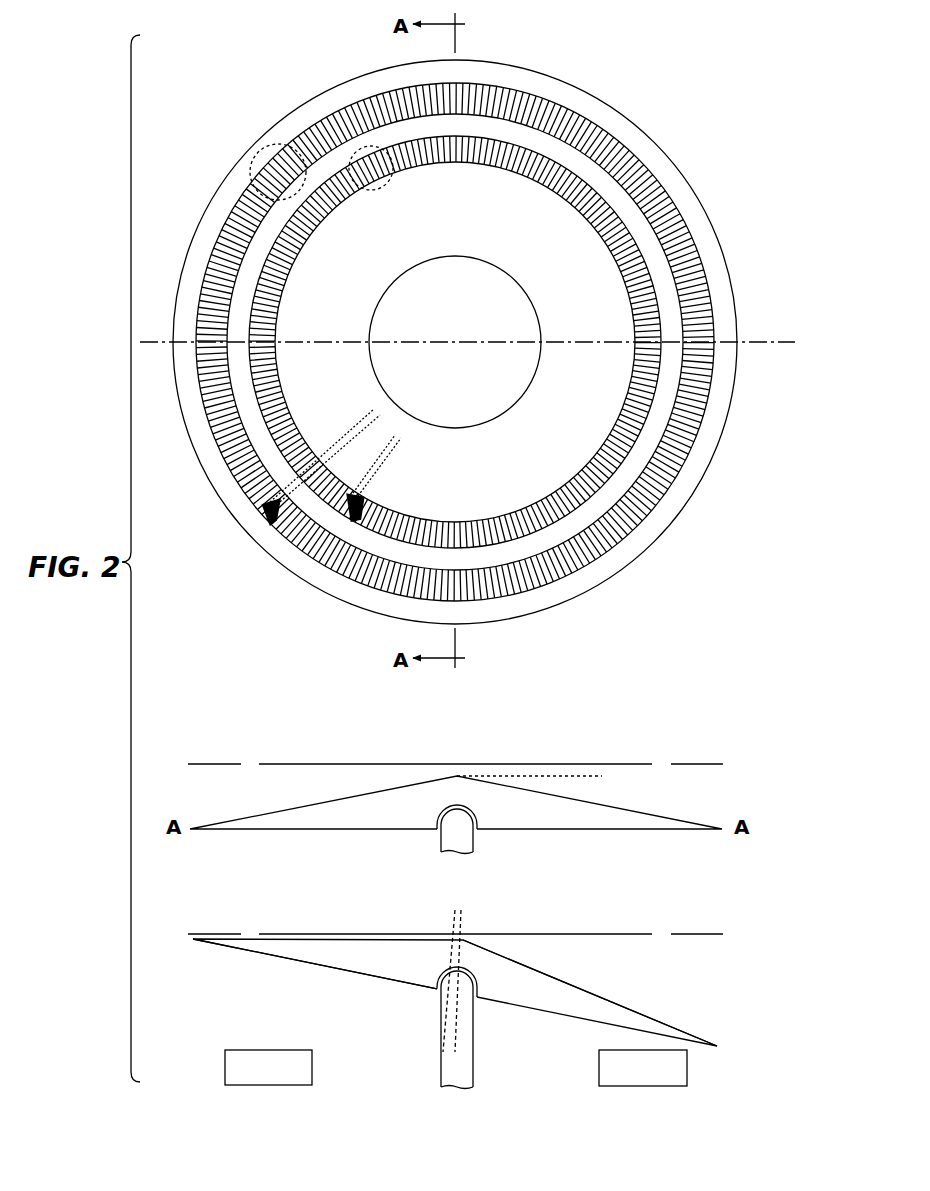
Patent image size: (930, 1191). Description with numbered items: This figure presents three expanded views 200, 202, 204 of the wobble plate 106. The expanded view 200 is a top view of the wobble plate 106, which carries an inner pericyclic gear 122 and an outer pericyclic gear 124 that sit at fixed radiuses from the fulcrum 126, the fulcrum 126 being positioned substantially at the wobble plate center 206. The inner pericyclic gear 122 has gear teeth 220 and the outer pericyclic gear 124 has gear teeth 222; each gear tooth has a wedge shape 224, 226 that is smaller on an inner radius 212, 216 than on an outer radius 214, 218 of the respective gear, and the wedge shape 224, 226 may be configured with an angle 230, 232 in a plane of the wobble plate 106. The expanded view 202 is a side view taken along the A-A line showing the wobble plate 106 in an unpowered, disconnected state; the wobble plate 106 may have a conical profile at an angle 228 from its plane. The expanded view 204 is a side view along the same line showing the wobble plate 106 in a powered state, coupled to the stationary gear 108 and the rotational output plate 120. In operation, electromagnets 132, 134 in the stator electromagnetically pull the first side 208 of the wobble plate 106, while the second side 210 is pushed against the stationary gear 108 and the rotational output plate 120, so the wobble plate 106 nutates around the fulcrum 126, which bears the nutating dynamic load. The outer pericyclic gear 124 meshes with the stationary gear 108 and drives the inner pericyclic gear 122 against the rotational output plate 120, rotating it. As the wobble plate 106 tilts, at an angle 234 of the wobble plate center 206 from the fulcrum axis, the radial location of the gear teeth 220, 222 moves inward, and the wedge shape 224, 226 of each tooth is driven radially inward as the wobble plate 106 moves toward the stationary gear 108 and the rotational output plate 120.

The wobble plate 106 is at (596, 96).
The stationary gear 108 is at (213, 763).
The rotational output plate 120 is at (278, 763).
The inner pericyclic gear 122 is at (638, 238).
The outer pericyclic gear 124 is at (713, 282).
The fulcrum 126 is at (437, 1065).
The electromagnet 132 is at (225, 1068).
The electromagnet 134 is at (599, 1068).
The expanded view 200 is at (727, 55).
The expanded view 202 is at (277, 688).
The expanded view 204 is at (745, 1065).
The wobble plate center 206 is at (451, 338).
The first side 208 is at (611, 1001).
The second side 210 is at (250, 951).
The inner radius 212 is at (612, 437).
The outer radius 214 is at (660, 388).
The inner radius 216 is at (550, 535).
The outer radius 218 is at (668, 494).
The gear teeth 220 is at (369, 144).
The gear teeth 222 is at (274, 141).
The wedge shape 224 is at (350, 513).
The wedge shape 226 is at (265, 512).
The angle 228 is at (557, 778).
The angle 230 is at (378, 473).
The angle 232 is at (340, 447).
The angle 234 is at (460, 920).